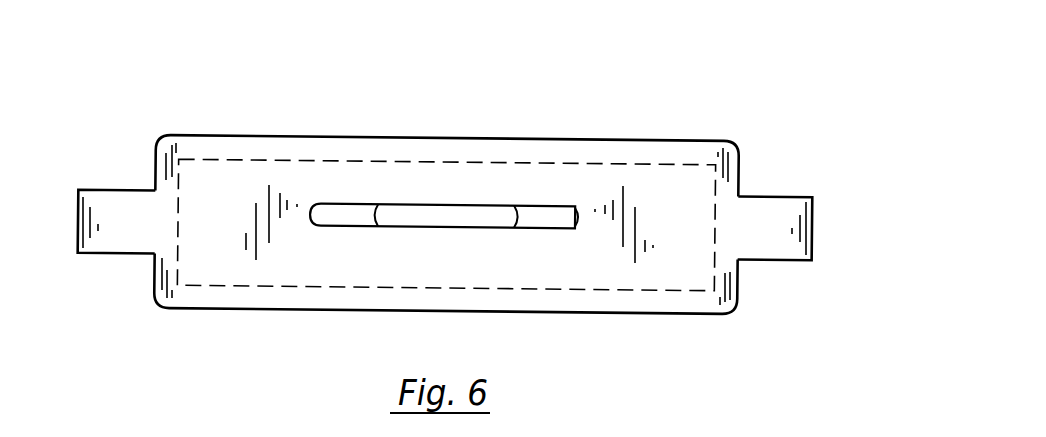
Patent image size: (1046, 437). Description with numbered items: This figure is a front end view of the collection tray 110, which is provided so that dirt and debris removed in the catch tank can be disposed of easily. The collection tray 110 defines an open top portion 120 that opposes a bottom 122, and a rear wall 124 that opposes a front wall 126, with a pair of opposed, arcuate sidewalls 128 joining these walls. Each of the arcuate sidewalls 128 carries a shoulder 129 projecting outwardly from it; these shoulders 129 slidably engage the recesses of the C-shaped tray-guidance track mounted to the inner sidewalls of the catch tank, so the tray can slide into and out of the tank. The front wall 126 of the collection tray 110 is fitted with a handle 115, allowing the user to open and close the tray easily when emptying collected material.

The collection tray 110 is at (612, 80).
The handle 115 is at (460, 213).
The open top portion 120 is at (313, 137).
The bottom 122 is at (627, 313).
The rear wall 124 is at (614, 163).
The front wall 126 is at (250, 252).
The arcuate sidewalls 128 is at (153, 280).
The shoulder 129 is at (95, 190).